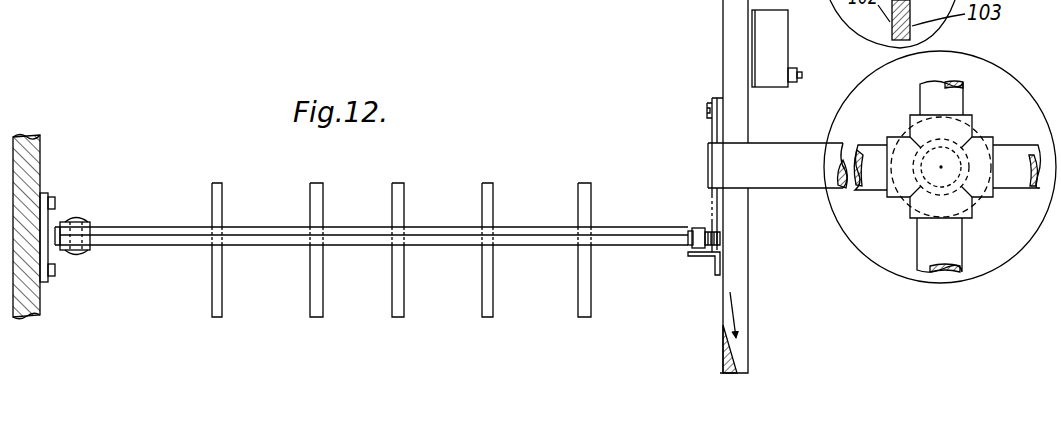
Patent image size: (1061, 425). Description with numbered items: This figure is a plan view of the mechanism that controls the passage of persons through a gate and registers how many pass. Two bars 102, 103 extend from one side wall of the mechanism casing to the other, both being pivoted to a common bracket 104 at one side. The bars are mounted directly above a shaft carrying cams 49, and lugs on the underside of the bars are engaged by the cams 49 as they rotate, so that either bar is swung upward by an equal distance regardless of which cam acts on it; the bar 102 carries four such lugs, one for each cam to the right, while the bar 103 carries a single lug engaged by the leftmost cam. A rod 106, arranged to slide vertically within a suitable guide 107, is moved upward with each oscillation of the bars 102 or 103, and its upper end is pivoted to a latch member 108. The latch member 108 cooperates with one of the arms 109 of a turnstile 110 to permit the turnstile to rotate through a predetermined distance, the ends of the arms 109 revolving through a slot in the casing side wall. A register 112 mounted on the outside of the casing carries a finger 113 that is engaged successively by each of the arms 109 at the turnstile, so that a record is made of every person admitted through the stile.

The cams 49 is at (310, 200).
The bar 102 is at (440, 221).
The bar 103 is at (435, 246).
The bracket 104 is at (52, 222).
The rod 106 is at (699, 242).
The guide 107 is at (691, 229).
The latch member 108 is at (713, 197).
The arms 109 is at (784, 153).
The turnstile 110 is at (951, 158).
The register 112 is at (780, 36).
The finger 113 is at (801, 74).